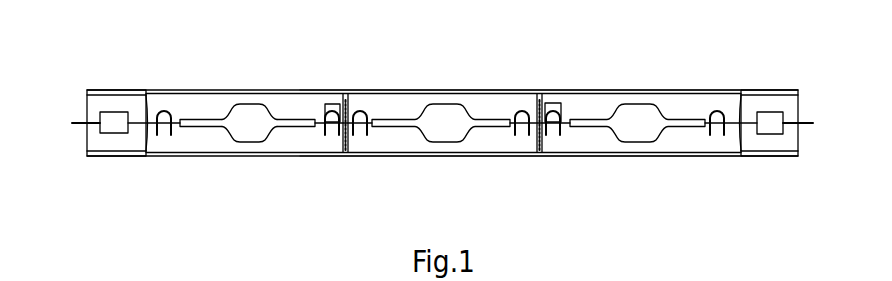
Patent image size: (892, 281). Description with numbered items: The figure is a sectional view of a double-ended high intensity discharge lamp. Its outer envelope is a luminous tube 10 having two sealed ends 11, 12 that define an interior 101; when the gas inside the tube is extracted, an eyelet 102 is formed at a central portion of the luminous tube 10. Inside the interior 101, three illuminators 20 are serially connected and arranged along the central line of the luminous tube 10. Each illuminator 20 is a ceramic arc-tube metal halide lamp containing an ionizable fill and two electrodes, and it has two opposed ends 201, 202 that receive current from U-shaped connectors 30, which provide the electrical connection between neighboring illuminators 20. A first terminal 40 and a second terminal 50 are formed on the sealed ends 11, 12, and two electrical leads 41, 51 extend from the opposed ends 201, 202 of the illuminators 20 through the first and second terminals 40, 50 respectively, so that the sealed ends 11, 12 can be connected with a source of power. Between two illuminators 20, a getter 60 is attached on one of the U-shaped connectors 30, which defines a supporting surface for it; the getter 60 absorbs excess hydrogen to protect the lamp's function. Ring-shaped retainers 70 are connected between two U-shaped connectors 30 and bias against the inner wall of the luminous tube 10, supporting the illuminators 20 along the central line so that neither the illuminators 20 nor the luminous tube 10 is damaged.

The luminous tube 10 is at (560, 90).
The interior 101 is at (687, 102).
The eyelet 102 is at (442, 158).
The sealed end 11 is at (770, 155).
The sealed end 12 is at (115, 155).
The illuminator 20 is at (247, 120).
The opposed end 201 is at (203, 125).
The opposed end 202 is at (300, 125).
The U-shaped connector 30 is at (165, 113).
The first terminal 40 is at (767, 118).
The electrical lead 41 is at (813, 118).
The second terminal 50 is at (118, 118).
The electrical lead 51 is at (73, 118).
The getter 60 is at (328, 105).
The ring-shaped retainer 70 is at (543, 143).